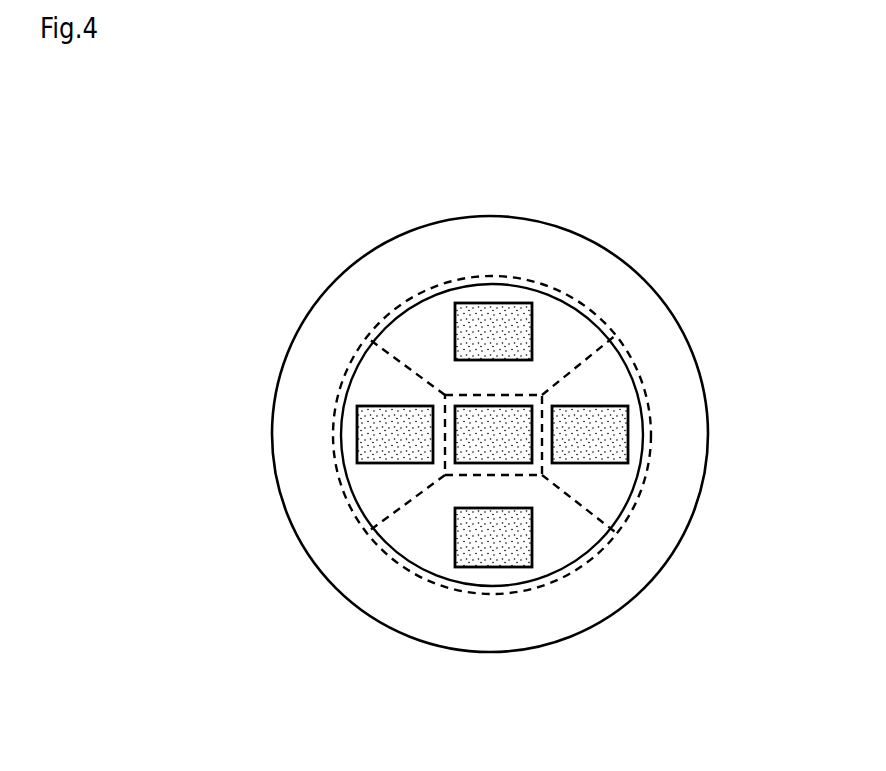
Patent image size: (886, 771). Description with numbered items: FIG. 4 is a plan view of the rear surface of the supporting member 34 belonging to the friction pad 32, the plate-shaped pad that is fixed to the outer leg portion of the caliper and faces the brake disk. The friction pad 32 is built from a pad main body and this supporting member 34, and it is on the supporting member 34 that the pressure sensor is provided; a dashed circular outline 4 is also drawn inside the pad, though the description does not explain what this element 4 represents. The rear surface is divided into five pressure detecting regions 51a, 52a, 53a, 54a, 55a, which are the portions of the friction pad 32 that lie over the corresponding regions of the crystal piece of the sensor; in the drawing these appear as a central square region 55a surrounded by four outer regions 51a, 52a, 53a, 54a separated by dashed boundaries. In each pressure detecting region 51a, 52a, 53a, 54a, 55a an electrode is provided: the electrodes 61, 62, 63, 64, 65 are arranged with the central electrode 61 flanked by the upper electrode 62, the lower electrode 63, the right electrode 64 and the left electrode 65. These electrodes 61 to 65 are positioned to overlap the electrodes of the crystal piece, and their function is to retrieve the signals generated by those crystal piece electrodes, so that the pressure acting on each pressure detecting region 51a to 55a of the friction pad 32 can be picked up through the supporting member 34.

The lens 4 is at (643, 387).
The friction pad 32 is at (581, 676).
The supporting member 34 is at (670, 565).
The pressure detecting region 51a is at (447, 393).
The pressure detecting region 52a is at (545, 285).
The pressure detecting region 53a is at (440, 582).
The pressure detecting region 54a is at (632, 352).
The pressure detecting region 55a is at (335, 467).
The electrode 61 is at (518, 406).
The electrode 62 is at (490, 304).
The electrode 63 is at (490, 567).
The electrode 64 is at (628, 432).
The electrode 65 is at (357, 433).